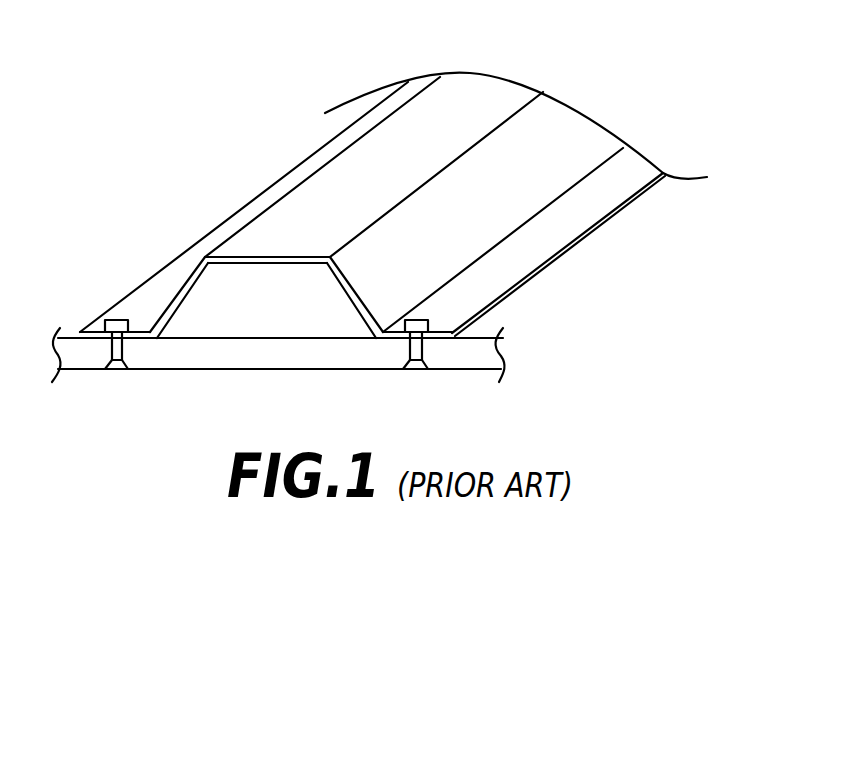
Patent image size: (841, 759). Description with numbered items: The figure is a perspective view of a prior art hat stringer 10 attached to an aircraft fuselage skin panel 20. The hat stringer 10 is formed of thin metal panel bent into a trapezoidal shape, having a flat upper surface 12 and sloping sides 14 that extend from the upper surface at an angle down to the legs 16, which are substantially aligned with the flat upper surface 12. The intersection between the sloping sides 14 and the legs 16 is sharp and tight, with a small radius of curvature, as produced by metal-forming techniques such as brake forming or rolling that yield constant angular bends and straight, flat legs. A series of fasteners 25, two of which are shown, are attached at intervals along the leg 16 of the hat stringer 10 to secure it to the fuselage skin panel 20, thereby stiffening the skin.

The hat stringer 10 is at (298, 223).
The flat upper surface 12 is at (473, 104).
The sloping sides 14 is at (575, 152).
The leg 16 is at (567, 220).
The fuselage skin panel 20 is at (487, 337).
The fasteners 25 is at (113, 320).